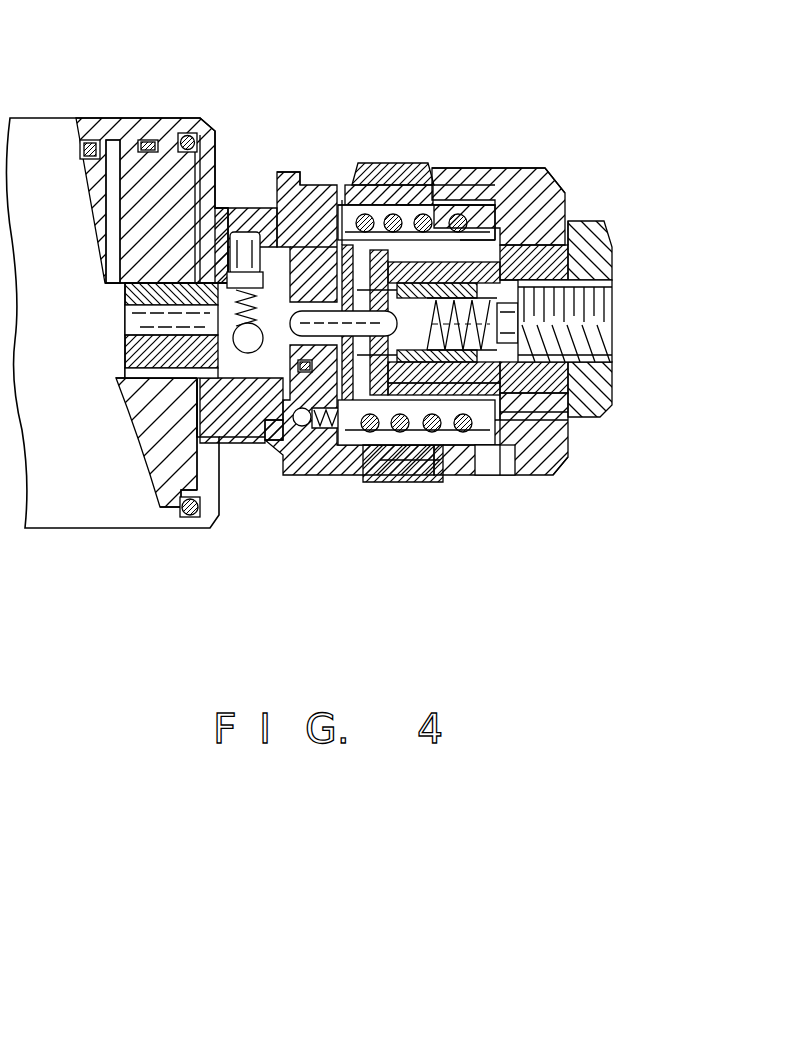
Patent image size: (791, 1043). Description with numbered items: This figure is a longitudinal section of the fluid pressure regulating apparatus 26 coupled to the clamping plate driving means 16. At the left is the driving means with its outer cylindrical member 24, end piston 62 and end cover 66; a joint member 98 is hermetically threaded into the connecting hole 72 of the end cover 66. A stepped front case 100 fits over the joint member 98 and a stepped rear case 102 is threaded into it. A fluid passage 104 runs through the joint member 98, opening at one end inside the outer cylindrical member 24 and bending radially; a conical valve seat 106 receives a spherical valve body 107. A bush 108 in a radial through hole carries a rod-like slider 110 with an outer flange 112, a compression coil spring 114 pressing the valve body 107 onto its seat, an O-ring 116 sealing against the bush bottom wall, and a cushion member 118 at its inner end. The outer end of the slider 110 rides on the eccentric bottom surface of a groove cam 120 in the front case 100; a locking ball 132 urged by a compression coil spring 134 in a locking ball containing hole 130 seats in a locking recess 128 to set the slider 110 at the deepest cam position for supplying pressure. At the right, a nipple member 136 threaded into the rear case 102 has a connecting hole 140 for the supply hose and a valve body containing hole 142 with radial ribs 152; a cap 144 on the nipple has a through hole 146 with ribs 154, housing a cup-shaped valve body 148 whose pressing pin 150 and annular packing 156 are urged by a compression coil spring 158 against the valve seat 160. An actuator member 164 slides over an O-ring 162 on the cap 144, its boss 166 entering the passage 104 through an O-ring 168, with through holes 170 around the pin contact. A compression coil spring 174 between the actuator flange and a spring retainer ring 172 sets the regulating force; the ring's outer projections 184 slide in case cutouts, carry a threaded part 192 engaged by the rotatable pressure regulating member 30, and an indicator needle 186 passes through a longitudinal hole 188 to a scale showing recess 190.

The clamping plate driving means 16 is at (40, 107).
The end piston 62 is at (93, 141).
The end cover 66 is at (135, 172).
The outer cylindrical member 24 is at (152, 138).
The connecting hole 72 is at (168, 188).
The O-ring 116 is at (236, 230).
The slider 110 is at (266, 212).
The bush 108 is at (285, 200).
The groove cam 120 is at (244, 288).
The front case 100 is at (313, 168).
The joint member 98 is at (312, 238).
The pressure regulating member 30 is at (393, 212).
The through holes 170 is at (346, 215).
The pressing pin 150 is at (360, 206).
The compression coil spring 174 is at (405, 205).
The radial ribs 154 is at (422, 212).
The annular packing 156 is at (440, 185).
The actuator member 164 is at (436, 170).
The O-ring 162 is at (470, 236).
The valve body 148 is at (478, 300).
The radial ribs 152 is at (522, 245).
The rear case 102 is at (548, 167).
The fluid pressure regulating apparatus 26 is at (512, 80).
The compression coil spring 158 is at (505, 290).
The nipple member 136 is at (607, 223).
The valve body containing hole 142 is at (505, 318).
The connecting hole 140 is at (600, 351).
The cap 144 is at (556, 470).
The scale showing recess 190 is at (515, 470).
The longitudinal hole 188 is at (495, 460).
The indicator needle 186 is at (460, 448).
The outer projections 184 is at (447, 445).
The through hole 146 is at (438, 462).
The threaded part 192 is at (412, 462).
The valve seat 160 is at (386, 458).
The spring retainer ring 172 is at (372, 482).
The O-ring 168 is at (312, 372).
The compression coil spring 134 is at (322, 470).
The locking ball 132 is at (303, 428).
The locking ball containing hole 130 is at (262, 350).
The locking recess 128 is at (268, 445).
The boss 166 is at (240, 440).
The outer flange 112 is at (118, 286).
The cushion member 118 is at (125, 297).
The compression coil spring 114 is at (125, 320).
The valve seat 106 is at (125, 350).
The valve body 107 is at (125, 374).
The fluid passage 104 is at (128, 388).